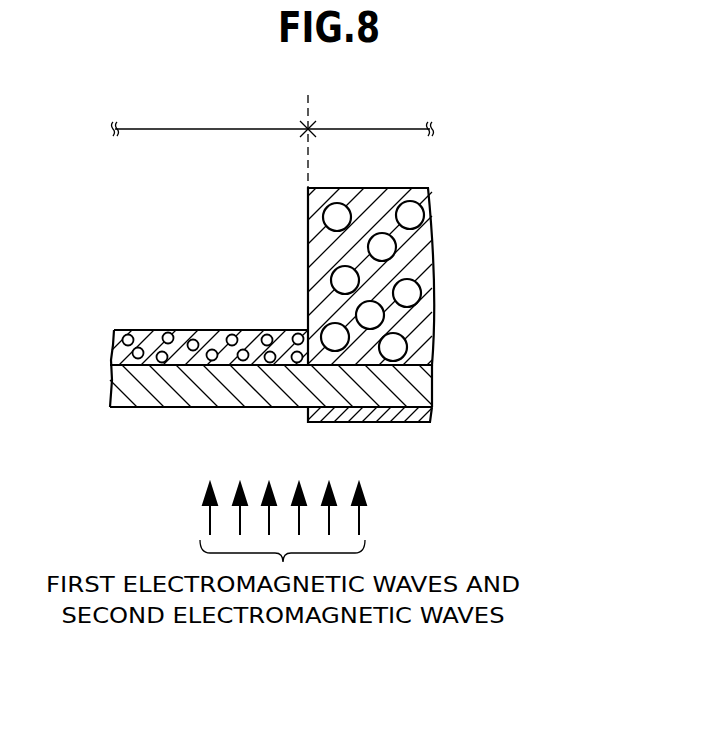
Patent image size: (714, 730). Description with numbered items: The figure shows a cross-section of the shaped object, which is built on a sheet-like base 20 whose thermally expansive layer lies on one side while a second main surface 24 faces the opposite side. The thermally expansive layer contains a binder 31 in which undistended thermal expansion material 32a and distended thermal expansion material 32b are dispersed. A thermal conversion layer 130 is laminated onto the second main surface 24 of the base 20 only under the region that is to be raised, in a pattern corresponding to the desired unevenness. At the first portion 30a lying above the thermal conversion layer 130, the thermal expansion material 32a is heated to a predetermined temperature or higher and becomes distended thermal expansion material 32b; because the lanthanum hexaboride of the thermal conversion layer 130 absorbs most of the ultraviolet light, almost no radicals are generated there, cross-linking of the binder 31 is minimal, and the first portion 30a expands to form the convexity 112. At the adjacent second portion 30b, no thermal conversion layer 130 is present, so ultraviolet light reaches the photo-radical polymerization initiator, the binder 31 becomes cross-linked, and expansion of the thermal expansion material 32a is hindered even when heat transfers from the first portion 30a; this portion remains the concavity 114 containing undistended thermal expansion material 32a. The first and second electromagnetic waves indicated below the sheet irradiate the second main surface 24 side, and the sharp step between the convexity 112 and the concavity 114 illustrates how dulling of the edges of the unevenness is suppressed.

The base 20 is at (432, 393).
The second main surface 24 is at (137, 407).
The first portion 30a is at (371, 119).
The second portion 30b is at (214, 120).
The binder 31 is at (415, 340).
The thermal expansion material 32a is at (300, 330).
The distended thermal expansion material 32b is at (421, 289).
The convexity 112 is at (428, 188).
The concavity 114 is at (163, 330).
The thermal conversion layer 130 is at (382, 422).